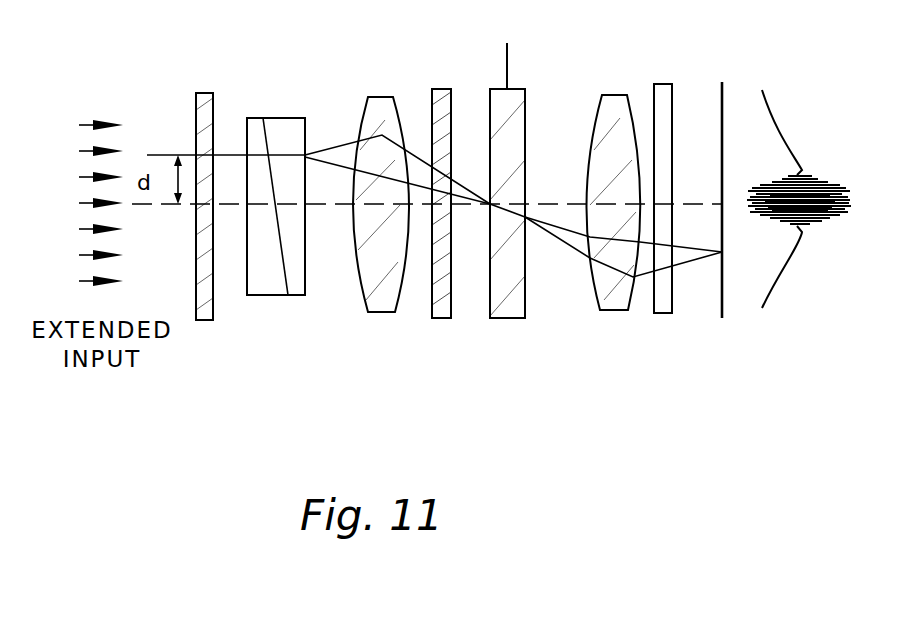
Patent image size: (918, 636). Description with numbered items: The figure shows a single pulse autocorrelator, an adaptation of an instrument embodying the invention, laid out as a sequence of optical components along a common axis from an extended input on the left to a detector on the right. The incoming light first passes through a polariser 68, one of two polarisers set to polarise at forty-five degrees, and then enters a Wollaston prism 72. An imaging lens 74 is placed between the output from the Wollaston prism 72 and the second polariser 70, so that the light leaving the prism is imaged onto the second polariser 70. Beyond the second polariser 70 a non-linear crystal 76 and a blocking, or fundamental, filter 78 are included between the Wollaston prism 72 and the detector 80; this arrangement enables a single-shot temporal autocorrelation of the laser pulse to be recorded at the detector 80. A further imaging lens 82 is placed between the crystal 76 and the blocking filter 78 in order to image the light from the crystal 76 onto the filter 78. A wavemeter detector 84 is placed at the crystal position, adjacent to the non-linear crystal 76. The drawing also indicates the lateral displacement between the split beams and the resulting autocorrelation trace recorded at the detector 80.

The polariser 68 is at (203, 320).
The second polariser 70 is at (443, 318).
The Wollaston prism 72 is at (260, 117).
The imaging lens 74 is at (382, 312).
The non-linear crystal 76 is at (507, 318).
The blocking filter 78 is at (663, 84).
The detector 80 is at (722, 90).
The further imaging lens 82 is at (615, 310).
The wavemeter detector 84 is at (507, 68).